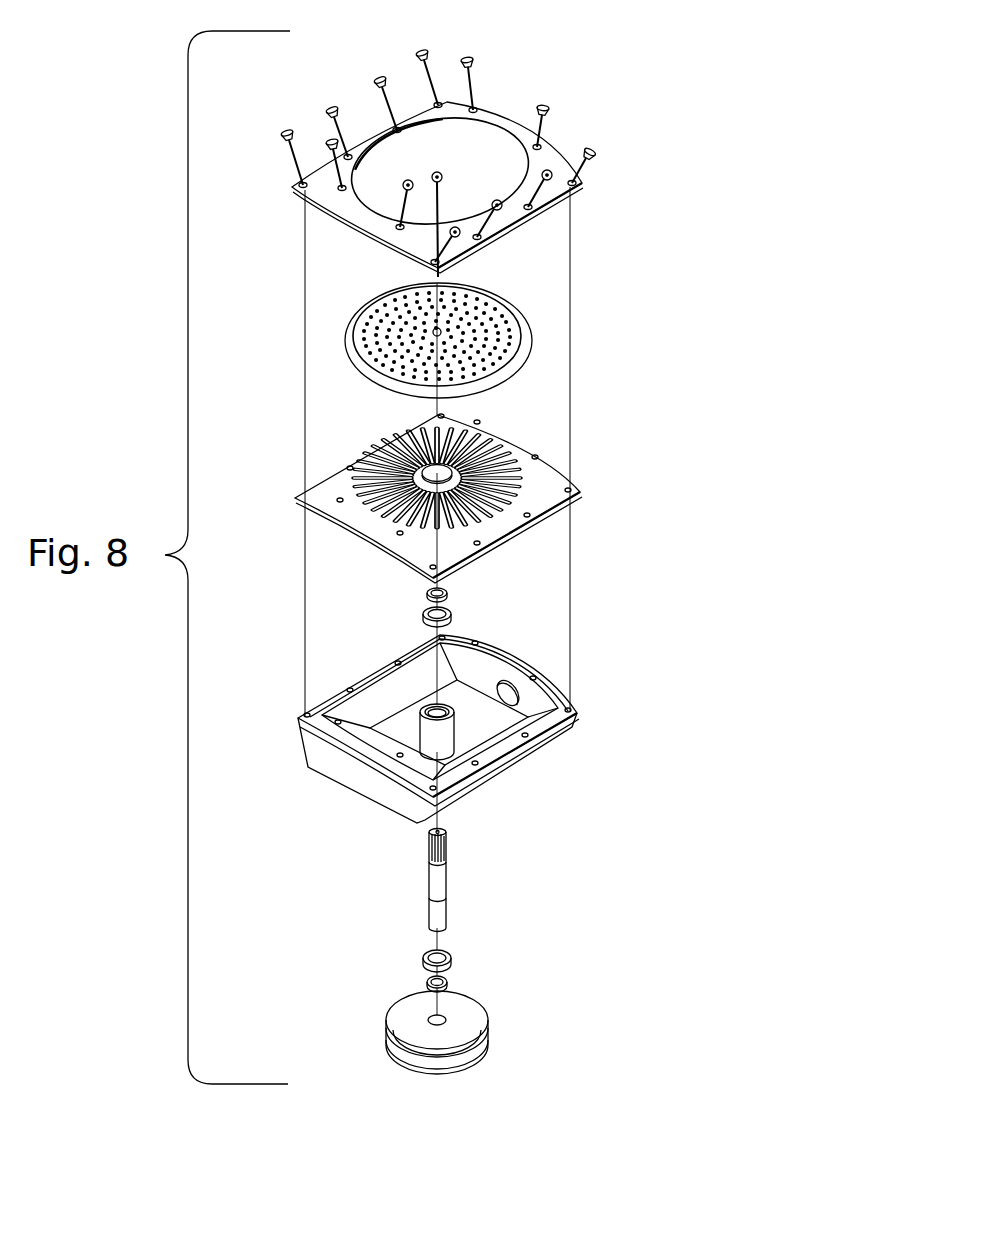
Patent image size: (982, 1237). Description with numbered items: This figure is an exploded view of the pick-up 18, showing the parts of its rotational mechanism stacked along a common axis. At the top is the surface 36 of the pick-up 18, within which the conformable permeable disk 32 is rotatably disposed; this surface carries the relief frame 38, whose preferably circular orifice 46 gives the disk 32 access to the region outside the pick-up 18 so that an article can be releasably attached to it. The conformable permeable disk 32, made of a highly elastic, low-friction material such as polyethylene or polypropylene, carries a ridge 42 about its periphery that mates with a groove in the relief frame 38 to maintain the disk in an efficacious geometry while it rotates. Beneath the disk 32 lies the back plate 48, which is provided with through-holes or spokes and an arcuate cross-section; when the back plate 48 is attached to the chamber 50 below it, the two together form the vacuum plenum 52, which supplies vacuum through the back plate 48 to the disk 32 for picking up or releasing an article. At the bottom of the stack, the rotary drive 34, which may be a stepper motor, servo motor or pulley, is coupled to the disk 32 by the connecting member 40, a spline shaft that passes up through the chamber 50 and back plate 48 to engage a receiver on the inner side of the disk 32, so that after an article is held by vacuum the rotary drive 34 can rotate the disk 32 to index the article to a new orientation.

The pick-up 18 is at (667, 302).
The conformable permeable disk 32 is at (510, 343).
The rotary drive 34 is at (465, 1017).
The surface 36 is at (510, 123).
The relief frame 38 is at (580, 195).
The connecting member 40 is at (435, 885).
The ridge 42 is at (350, 333).
The orifice 46 is at (447, 153).
The back plate 48 is at (552, 500).
The chamber 50 is at (508, 662).
The vacuum plenum 52 is at (593, 403).